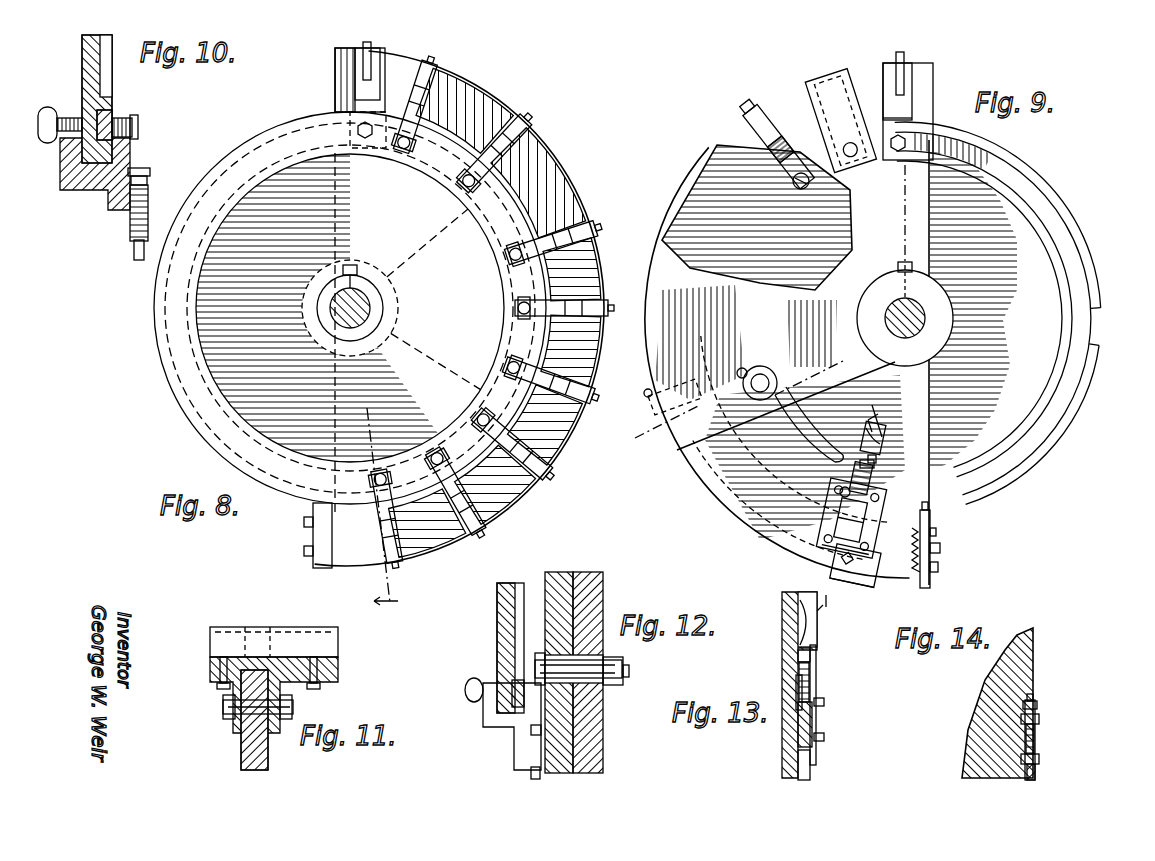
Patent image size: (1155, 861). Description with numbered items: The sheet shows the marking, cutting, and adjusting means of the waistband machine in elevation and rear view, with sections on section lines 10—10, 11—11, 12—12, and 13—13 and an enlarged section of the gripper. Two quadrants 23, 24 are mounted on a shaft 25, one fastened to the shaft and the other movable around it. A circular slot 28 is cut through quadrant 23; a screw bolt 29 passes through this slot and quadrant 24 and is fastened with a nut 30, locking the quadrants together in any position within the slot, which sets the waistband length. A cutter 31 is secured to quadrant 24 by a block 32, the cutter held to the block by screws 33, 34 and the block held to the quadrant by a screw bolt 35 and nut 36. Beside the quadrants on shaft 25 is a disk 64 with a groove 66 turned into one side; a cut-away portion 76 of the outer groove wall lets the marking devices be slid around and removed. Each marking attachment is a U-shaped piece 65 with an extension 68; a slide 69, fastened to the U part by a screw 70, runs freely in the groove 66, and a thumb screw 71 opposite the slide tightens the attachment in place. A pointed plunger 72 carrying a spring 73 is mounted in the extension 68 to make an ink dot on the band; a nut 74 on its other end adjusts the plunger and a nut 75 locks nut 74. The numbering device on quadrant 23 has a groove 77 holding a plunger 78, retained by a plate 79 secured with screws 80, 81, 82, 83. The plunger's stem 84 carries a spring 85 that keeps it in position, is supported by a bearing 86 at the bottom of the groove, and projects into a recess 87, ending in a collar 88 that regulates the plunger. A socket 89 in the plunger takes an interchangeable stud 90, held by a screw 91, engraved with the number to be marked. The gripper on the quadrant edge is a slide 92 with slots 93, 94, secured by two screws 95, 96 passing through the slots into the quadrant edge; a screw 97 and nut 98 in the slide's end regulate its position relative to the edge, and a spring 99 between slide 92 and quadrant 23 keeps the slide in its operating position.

In FIG. 8, the section line 10 is at (377, 510).
In FIG. 9, the section line 11 is at (910, 58).
In FIG. 9, the section line 12 is at (733, 398).
In FIG. 9, the section line 13 is at (887, 415).
In FIG. 13, the section line 13 is at (834, 602).
In FIG. 9, the quadrant 23 is at (945, 455).
In FIG. 12, the quadrant 23 is at (585, 558).
In FIG. 9, the quadrant 24 is at (672, 275).
In FIG. 11, the quadrant 24 is at (262, 768).
In FIG. 12, the quadrant 24 is at (605, 600).
In FIG. 8, the shaft 25 is at (370, 310).
In FIG. 9, the shaft 25 is at (895, 315).
In FIG. 9, the circular slot 28 is at (792, 449).
In FIG. 12, the screw bolt 29 is at (590, 685).
In FIG. 9, the nut 30 is at (770, 372).
In FIG. 12, the nut 30 is at (628, 672).
In FIG. 8, the cutter 31 is at (375, 64).
In FIG. 9, the cutter 31 is at (906, 70).
In FIG. 11, the cutter 31 is at (262, 640).
In FIG. 8, the block 32 is at (345, 80).
In FIG. 9, the block 32 is at (885, 82).
In FIG. 11, the block 32 is at (340, 672).
In FIG. 11, the screw 33 is at (222, 690).
In FIG. 11, the screw 34 is at (320, 687).
In FIG. 8, the screw bolt 35 is at (348, 118).
In FIG. 9, the screw bolt 35 is at (912, 143).
In FIG. 11, the screw bolt 35 is at (226, 712).
In FIG. 11, the nut 36 is at (288, 720).
In FIG. 8, the disk 64 is at (180, 393).
In FIG. 9, the disk 64 is at (1062, 210).
In FIG. 8, the U shaped piece 65 is at (432, 95).
In FIG. 9, the U shaped piece 65 is at (760, 115).
In FIG. 10, the U shaped piece 65 is at (128, 168).
In FIG. 12, the U shaped piece 65 is at (500, 725).
In FIG. 8, the groove 66 is at (180, 358).
In FIG. 9, the groove 66 is at (1040, 452).
In FIG. 10, the extension 68 is at (130, 215).
In FIG. 12, the extension 68 is at (525, 745).
In FIG. 9, the slide 69 is at (806, 172).
In FIG. 10, the slide 69 is at (112, 112).
In FIG. 12, the slide 69 is at (512, 700).
In FIG. 9, the screw 70 is at (798, 165).
In FIG. 10, the screw 70 is at (139, 125).
In FIG. 12, the screw 70 is at (510, 655).
In FIG. 8, the thumb screw 71 is at (460, 178).
In FIG. 10, the thumb screw 71 is at (50, 107).
In FIG. 12, the thumb screw 71 is at (465, 690).
In FIG. 10, the plunger 72 is at (136, 250).
In FIG. 12, the plunger 72 is at (538, 778).
In FIG. 10, the spring 73 is at (150, 196).
In FIG. 10, the nut 74 is at (150, 178).
In FIG. 10, the nut 75 is at (150, 169).
In FIG. 8, the cut away portion 76 is at (165, 325).
In FIG. 9, the cut away portion 76 is at (1093, 326).
In FIG. 9, the groove 77 is at (872, 482).
In FIG. 13, the groove 77 is at (812, 690).
In FIG. 13, the plunger 78 is at (818, 723).
In FIG. 9, the plate 79 is at (836, 544).
In FIG. 9, the screw 80 is at (875, 550).
In FIG. 9, the screw 81 is at (806, 556).
In FIG. 9, the screw 82 is at (880, 500).
In FIG. 9, the screw 83 is at (840, 526).
In FIG. 13, the stem 84 is at (814, 668).
In FIG. 9, the spring 85 is at (840, 492).
In FIG. 13, the spring 85 is at (797, 690).
In FIG. 9, the bearing 86 is at (880, 462).
In FIG. 13, the bearing 86 is at (797, 657).
In FIG. 9, the recess 87 is at (885, 436).
In FIG. 13, the recess 87 is at (815, 630).
In FIG. 9, the collar 88 is at (873, 440).
In FIG. 13, the collar 88 is at (800, 628).
In FIG. 9, the socket 89 is at (866, 460).
In FIG. 13, the socket 89 is at (814, 750).
In FIG. 13, the stud 90 is at (808, 775).
In FIG. 13, the screw 91 is at (820, 765).
In FIG. 9, the slide 92 is at (932, 585).
In FIG. 14, the slide 92 is at (1033, 785).
In FIG. 14, the slot 93 is at (1040, 776).
In FIG. 14, the slot 94 is at (1042, 742).
In FIG. 9, the screw 95 is at (939, 567).
In FIG. 14, the screw 95 is at (1043, 760).
In FIG. 9, the screw 96 is at (940, 548).
In FIG. 14, the screw 96 is at (1042, 720).
In FIG. 9, the screw 97 is at (935, 520).
In FIG. 14, the screw 97 is at (1040, 700).
In FIG. 9, the nut 98 is at (937, 533).
In FIG. 14, the nut 98 is at (1042, 708).
In FIG. 9, the spring 99 is at (912, 550).